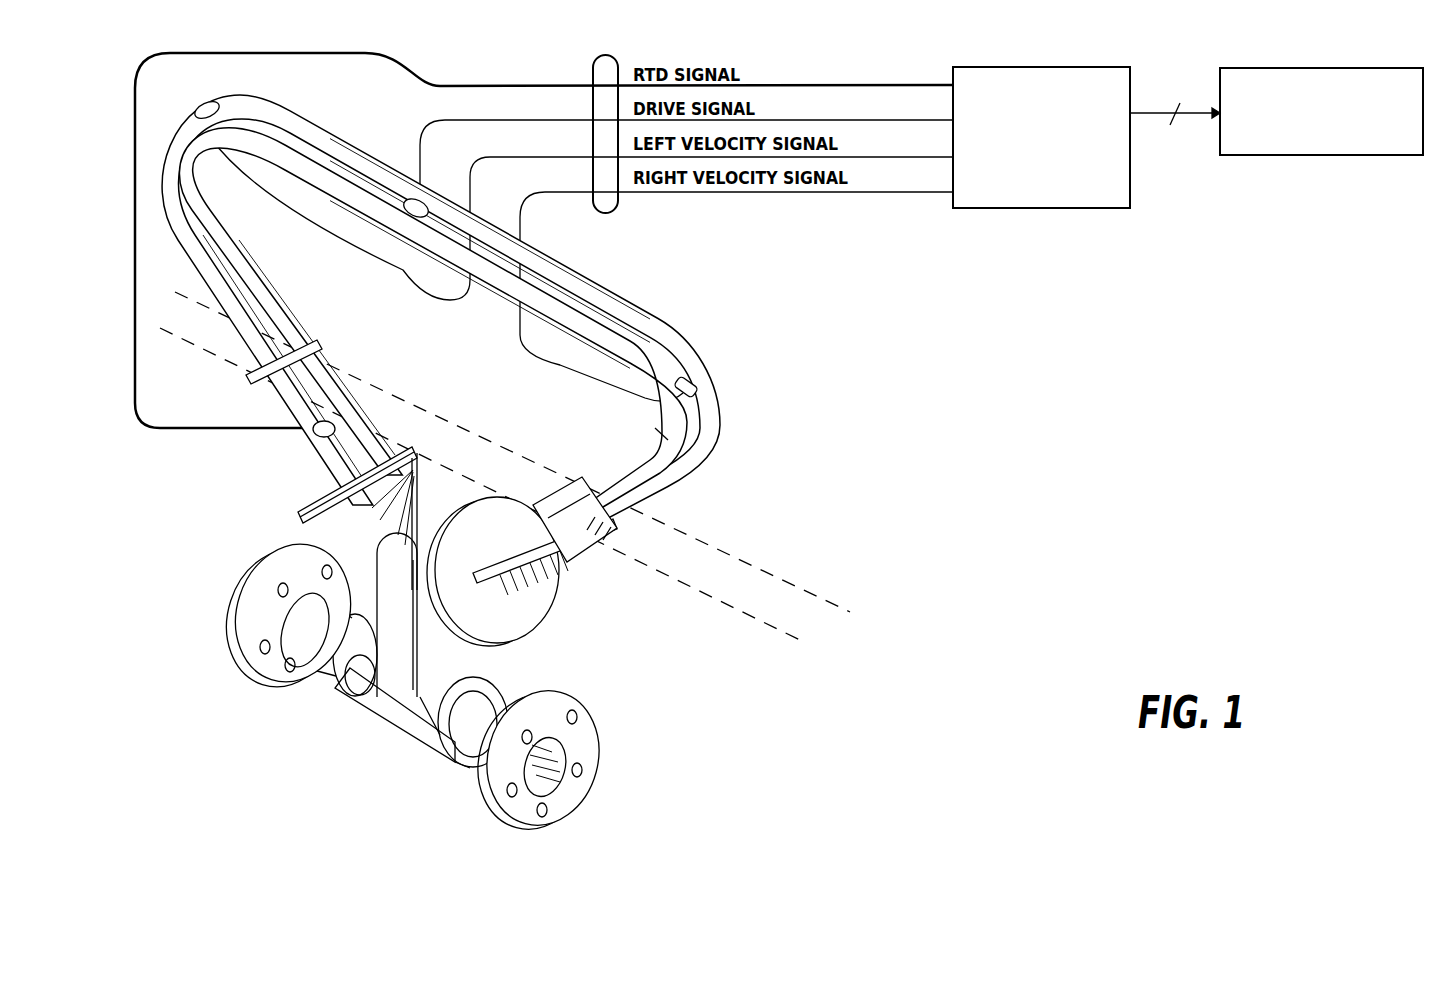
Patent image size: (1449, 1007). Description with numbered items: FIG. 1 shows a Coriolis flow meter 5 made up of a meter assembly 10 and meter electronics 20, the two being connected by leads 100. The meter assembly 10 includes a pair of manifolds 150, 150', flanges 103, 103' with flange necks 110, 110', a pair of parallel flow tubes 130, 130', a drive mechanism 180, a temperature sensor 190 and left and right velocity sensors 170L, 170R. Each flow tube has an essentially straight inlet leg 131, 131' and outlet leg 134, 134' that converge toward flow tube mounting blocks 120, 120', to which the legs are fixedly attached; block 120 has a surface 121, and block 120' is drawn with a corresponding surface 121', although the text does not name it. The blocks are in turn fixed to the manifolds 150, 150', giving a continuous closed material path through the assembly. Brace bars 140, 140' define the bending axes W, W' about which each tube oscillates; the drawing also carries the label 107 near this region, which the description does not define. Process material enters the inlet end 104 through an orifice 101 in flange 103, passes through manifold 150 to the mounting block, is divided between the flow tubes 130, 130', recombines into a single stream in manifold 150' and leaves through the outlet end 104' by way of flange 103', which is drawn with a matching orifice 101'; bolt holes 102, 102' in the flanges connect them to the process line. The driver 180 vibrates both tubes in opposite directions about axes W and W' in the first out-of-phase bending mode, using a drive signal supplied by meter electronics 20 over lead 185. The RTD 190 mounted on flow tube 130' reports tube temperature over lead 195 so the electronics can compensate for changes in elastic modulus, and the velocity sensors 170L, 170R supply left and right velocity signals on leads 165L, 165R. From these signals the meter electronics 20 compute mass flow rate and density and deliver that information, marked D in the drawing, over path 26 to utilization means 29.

The Coriolis flow meter 5 is at (927, 357).
The meter assembly 10 is at (606, 580).
The meter electronics 20 is at (1072, 209).
The path 26 is at (1150, 114).
The utilization means 29 is at (1340, 156).
The leads 100 is at (590, 62).
The orifice 101 is at (250, 615).
The outlet flange 101' is at (568, 760).
The holes 102 is at (245, 629).
The bolt holes 102' is at (589, 749).
The flange 103 is at (248, 532).
The flange 103' is at (594, 840).
The inlet end 104 is at (190, 618).
The outlet end 104' is at (486, 844).
The bend axis 107 is at (475, 460).
The flange neck 110 is at (297, 662).
The flange neck 110' is at (441, 779).
The flow tube mounting block 120 is at (316, 485).
The flow tube mounting block 120' is at (525, 575).
The surface 121 is at (451, 420).
The brace bar plate 121' is at (575, 499).
The flow tube 130 is at (433, 322).
The flow tube 130' is at (441, 310).
The inlet leg 131 is at (169, 270).
The inlet leg 131' is at (305, 275).
The outlet leg 134 is at (606, 417).
The outlet leg 134' is at (758, 455).
The brace bar 140 is at (251, 376).
The brace bar 140' is at (562, 569).
The manifold 150 is at (394, 607).
The manifold 150' is at (488, 712).
The lead 165L is at (908, 158).
The lead 165R is at (860, 194).
The velocity sensor 170L is at (227, 82).
The velocity sensor 170R is at (700, 390).
The drive mechanism 180 is at (414, 200).
The lead 185 is at (910, 119).
The temperature sensor 190 is at (333, 428).
The lead 195 is at (853, 84).
The output signal path D is at (1182, 110).
The bending axis W is at (493, 493).
The bending axis W' is at (533, 458).